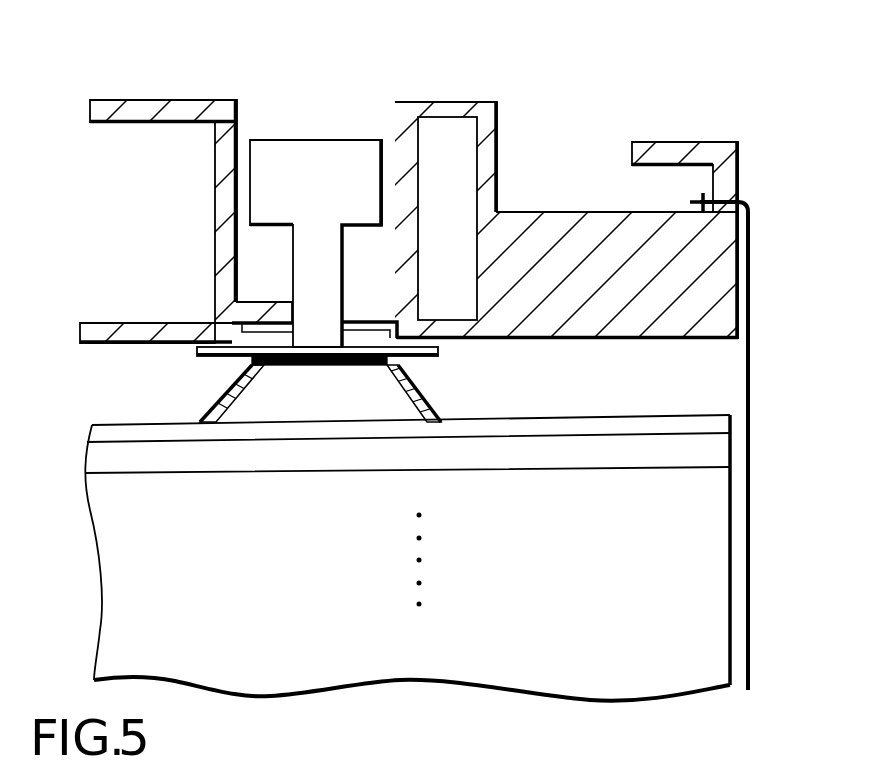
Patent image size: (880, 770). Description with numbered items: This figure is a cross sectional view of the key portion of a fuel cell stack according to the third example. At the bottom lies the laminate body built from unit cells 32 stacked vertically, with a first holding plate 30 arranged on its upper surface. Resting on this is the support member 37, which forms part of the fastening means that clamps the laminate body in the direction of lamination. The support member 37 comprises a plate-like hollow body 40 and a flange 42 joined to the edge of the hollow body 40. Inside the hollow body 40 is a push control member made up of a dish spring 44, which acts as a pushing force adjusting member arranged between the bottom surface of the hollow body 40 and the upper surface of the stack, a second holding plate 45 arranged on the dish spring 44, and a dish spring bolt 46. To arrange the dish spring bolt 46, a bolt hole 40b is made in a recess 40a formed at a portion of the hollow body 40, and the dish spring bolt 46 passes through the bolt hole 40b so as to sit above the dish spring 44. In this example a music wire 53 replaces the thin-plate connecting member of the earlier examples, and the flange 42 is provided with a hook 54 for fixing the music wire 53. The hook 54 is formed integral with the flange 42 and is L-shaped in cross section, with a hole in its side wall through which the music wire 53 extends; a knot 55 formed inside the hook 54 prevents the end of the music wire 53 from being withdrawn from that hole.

The support member 37 is at (259, 85).
The hollow body 40 is at (143, 100).
The recess 40a is at (243, 248).
The bolt hole 40b is at (296, 310).
The flange 42 is at (538, 225).
The dish spring bolt 46 is at (315, 148).
The hook 54 is at (702, 152).
The knot 55 is at (695, 202).
The music wire 53 is at (746, 403).
The second holding plate 45 is at (438, 358).
The dish spring 44 is at (237, 392).
The first holding plate 30 is at (110, 432).
The unit cell 32 is at (165, 455).